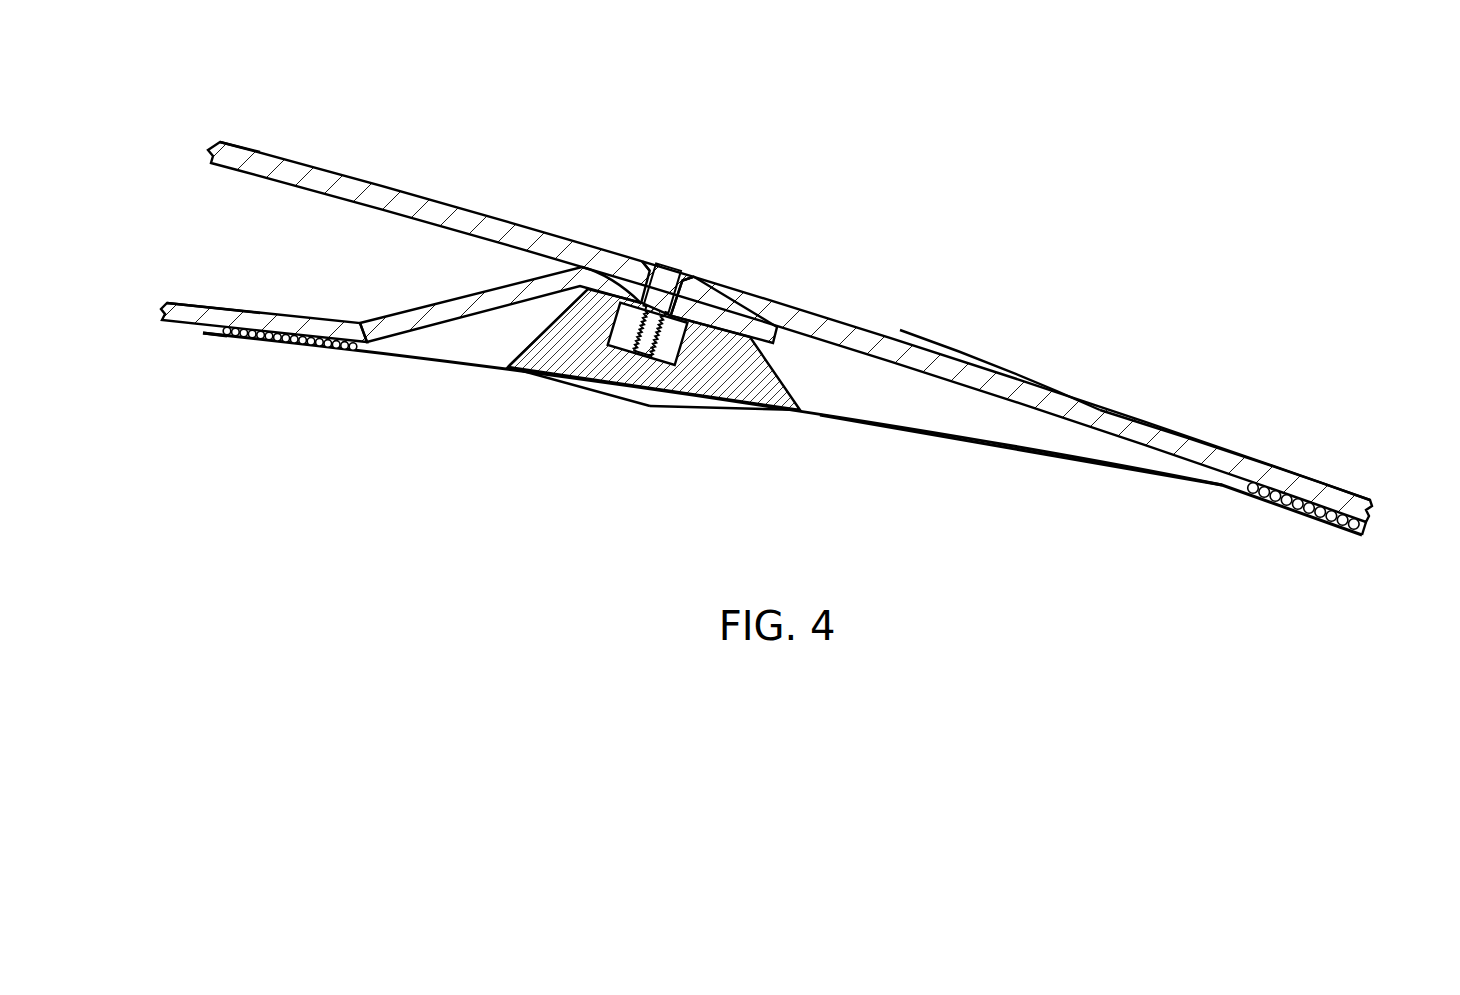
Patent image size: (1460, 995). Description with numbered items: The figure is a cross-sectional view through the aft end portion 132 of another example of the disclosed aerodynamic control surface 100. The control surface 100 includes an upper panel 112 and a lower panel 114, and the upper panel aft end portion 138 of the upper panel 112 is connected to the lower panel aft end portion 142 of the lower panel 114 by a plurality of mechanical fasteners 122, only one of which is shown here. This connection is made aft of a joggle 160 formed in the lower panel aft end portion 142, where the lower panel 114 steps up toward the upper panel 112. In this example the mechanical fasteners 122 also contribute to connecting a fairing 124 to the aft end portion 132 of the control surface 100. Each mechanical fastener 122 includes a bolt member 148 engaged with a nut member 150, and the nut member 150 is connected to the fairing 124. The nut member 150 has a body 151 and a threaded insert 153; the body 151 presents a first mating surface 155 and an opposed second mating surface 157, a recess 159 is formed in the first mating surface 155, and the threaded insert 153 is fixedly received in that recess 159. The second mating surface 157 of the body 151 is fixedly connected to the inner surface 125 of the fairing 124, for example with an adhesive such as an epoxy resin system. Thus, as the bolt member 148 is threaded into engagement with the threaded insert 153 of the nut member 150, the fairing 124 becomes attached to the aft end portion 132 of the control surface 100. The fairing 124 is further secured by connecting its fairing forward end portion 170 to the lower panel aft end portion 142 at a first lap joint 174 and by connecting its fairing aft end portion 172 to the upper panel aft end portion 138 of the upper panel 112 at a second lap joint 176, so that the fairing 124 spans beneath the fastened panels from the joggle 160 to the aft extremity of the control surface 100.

The aerodynamic control surface 100 is at (1060, 141).
The upper panel 112 is at (260, 141).
The lower panel 114 is at (166, 323).
The mechanical fastener 122 is at (706, 266).
The fairing 124 is at (877, 430).
The inner surface 125 is at (900, 427).
The aft end portion 132 is at (1182, 231).
The upper panel aft end portion 138 is at (220, 184).
The lower panel aft end portion 142 is at (226, 291).
The bolt member 148 is at (669, 283).
The nut member 150 is at (792, 397).
The body 151 is at (582, 370).
The threaded insert 153 is at (668, 368).
The first mating surface 155 is at (735, 323).
The second mating surface 157 is at (727, 404).
The recess 159 is at (590, 328).
The joggle 160 is at (432, 300).
The fairing forward end portion 170 is at (240, 352).
The fairing aft end portion 172 is at (1266, 517).
The first lap joint 174 is at (200, 342).
The second lap joint 176 is at (1369, 538).